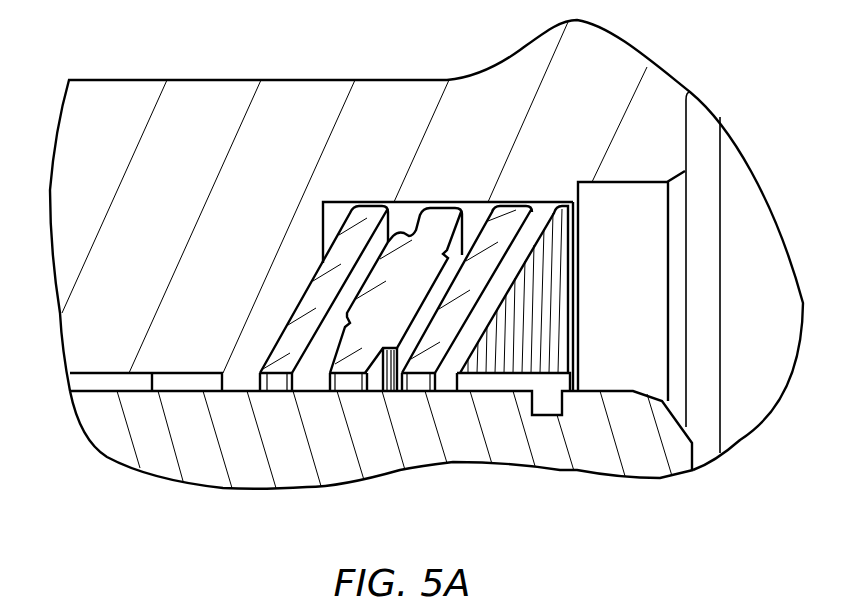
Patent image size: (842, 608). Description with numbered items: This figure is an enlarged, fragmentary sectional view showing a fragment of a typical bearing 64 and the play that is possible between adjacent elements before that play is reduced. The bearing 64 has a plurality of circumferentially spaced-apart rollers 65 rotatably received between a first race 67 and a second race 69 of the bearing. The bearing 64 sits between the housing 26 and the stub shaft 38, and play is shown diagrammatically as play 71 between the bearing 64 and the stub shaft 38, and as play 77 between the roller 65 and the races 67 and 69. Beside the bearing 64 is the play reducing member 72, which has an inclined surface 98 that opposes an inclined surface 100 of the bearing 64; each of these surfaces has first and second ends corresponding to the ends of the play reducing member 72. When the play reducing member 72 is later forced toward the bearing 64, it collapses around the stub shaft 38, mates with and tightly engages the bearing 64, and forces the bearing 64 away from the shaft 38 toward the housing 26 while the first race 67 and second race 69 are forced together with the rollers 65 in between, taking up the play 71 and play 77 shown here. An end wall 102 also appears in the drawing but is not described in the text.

The housing 26 is at (218, 107).
The stub shaft 38 is at (380, 445).
The bearing 64 is at (457, 125).
The rollers 65 is at (383, 305).
The first race 67 is at (512, 218).
The second race 69 is at (290, 352).
The play 71 is at (275, 385).
The play reducing member 72 is at (553, 238).
The play 77 is at (367, 265).
The inclined surface 98 is at (468, 332).
The inclined surface 100 is at (508, 286).
The end wall 102 is at (585, 281).